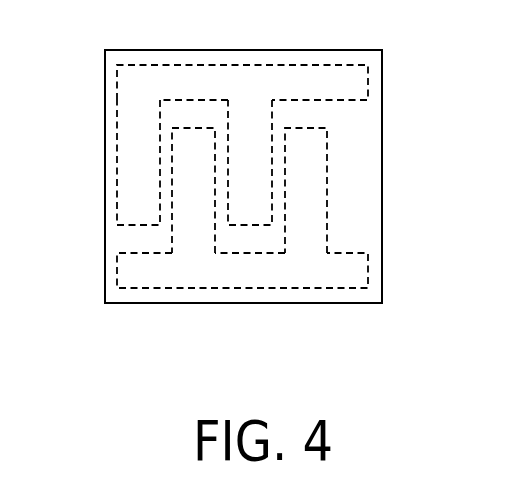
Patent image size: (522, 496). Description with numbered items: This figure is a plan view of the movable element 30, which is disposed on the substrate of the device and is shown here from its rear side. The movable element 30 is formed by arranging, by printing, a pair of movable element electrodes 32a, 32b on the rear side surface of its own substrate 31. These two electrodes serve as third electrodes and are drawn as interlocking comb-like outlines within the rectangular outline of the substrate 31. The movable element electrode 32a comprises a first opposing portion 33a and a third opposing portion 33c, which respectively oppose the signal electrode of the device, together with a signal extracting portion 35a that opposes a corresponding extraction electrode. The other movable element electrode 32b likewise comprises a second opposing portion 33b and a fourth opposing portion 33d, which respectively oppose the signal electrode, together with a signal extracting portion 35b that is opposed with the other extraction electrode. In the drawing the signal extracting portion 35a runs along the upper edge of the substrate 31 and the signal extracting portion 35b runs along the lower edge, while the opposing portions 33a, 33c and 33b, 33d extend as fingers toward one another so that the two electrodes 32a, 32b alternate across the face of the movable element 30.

The movable element 30 is at (254, 178).
The substrate 31 is at (384, 111).
The movable element electrode 32a is at (210, 178).
The movable element electrode 32b is at (210, 178).
The first opposing portion 33a is at (118, 139).
The second opposing portion 33b is at (172, 188).
The third opposing portion 33c is at (252, 227).
The fourth opposing portion 33d is at (300, 125).
The signal extracting portion 35a is at (322, 63).
The signal extracting portion 35b is at (343, 292).